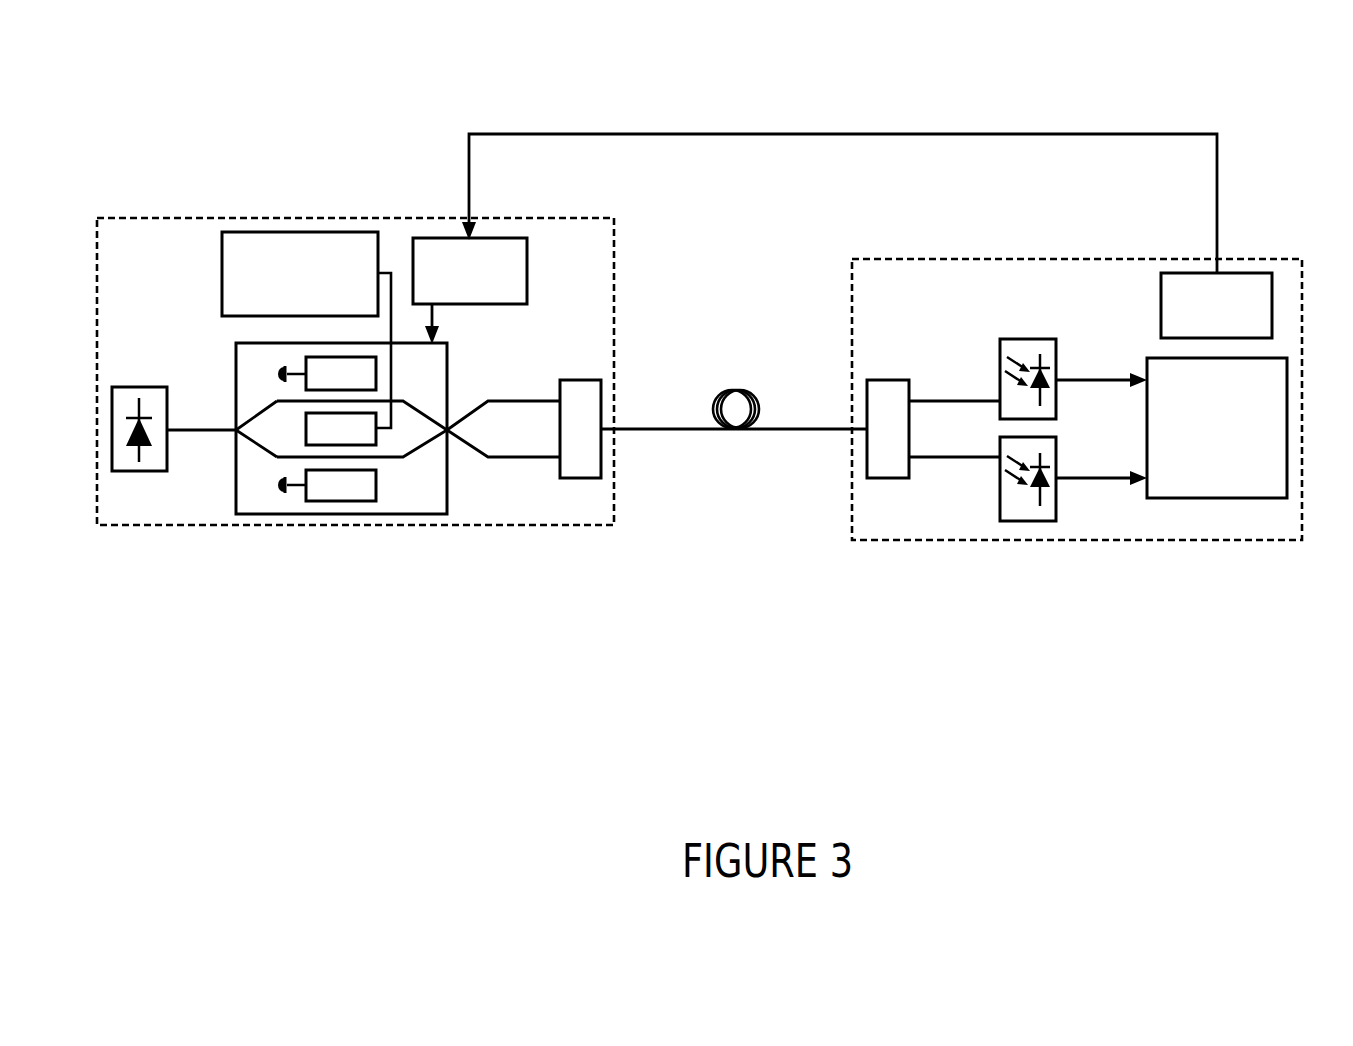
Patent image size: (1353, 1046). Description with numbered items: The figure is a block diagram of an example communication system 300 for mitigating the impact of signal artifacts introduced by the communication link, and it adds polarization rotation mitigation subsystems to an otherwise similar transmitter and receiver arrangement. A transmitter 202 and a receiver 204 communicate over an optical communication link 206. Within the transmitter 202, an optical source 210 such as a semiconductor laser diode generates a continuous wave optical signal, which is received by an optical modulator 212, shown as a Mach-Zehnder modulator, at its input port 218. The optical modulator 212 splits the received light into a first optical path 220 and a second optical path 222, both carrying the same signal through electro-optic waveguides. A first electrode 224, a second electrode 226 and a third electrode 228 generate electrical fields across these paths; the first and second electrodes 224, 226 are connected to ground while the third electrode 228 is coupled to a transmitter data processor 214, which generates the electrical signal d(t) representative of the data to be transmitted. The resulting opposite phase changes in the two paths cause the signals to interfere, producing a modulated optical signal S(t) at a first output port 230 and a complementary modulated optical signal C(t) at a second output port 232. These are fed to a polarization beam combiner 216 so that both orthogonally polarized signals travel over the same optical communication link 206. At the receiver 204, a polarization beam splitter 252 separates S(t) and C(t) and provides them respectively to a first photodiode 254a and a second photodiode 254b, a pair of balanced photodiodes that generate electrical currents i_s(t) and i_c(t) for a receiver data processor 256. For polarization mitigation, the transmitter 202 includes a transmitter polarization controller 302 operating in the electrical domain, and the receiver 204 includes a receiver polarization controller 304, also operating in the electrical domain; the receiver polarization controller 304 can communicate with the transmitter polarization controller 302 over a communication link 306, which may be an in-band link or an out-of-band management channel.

The communication system 300 is at (830, 63).
The communication link 306 is at (931, 134).
The transmitter 202 is at (148, 218).
The transmitter data processor 214 is at (222, 274).
The transmitter polarization controller 302 is at (437, 238).
The optical source 210 is at (134, 387).
The optical modulator 212 is at (450, 347).
The input port 218 is at (228, 434).
The first optical path 220 is at (262, 405).
The second optical path 222 is at (266, 452).
The first electrode 224 is at (327, 374).
The third electrode 228 is at (341, 430).
The second electrode 226 is at (327, 486).
The first output port 230 is at (538, 400).
The second output port 232 is at (503, 457).
The polarization beam combiner 216 is at (578, 478).
The optical communication link 206 is at (630, 428).
The receiver 204 is at (995, 259).
The polarization beam splitter 252 is at (880, 380).
The first photodiode 254a is at (1057, 345).
The second photodiode 254b is at (1057, 507).
The receiver data processor 256 is at (1283, 358).
The receiver polarization controller 304 is at (1260, 273).